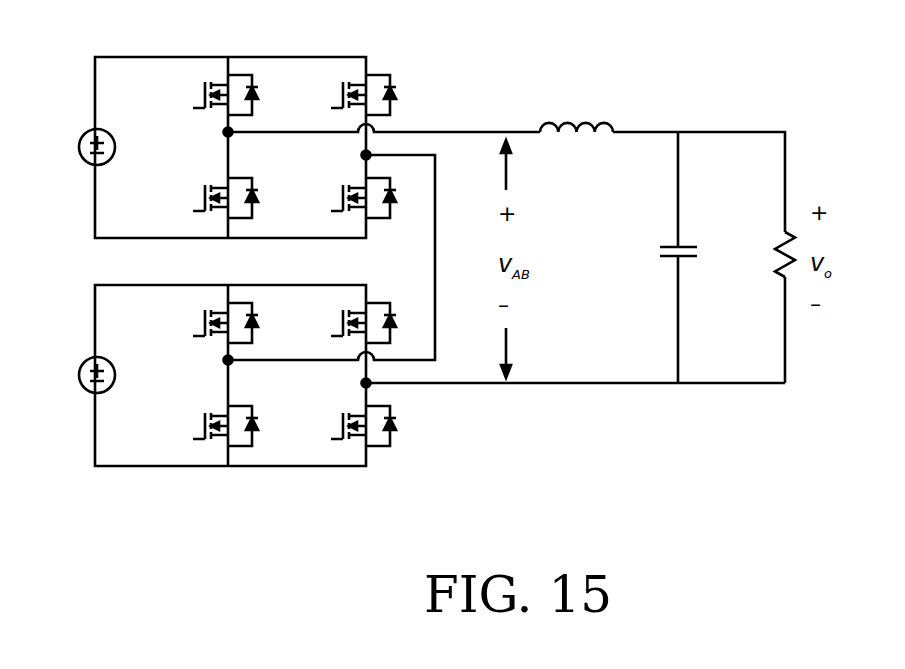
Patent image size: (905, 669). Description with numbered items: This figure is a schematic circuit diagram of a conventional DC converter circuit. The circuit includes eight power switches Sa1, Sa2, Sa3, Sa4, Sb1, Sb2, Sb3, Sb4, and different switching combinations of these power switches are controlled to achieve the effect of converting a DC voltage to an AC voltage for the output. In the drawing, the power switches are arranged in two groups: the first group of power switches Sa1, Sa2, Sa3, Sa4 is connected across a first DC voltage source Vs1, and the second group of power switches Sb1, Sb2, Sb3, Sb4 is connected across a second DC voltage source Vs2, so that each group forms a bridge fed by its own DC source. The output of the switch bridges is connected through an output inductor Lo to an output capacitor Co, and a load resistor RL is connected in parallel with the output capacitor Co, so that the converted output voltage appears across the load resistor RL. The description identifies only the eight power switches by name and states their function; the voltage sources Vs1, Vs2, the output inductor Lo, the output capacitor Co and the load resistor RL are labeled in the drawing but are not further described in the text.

The first DC voltage source Vs1 is at (77, 152).
The second DC voltage source Vs2 is at (77, 380).
The power switch Sa1 is at (207, 95).
The power switch Sa2 is at (207, 198).
The power switch Sa3 is at (346, 95).
The power switch Sa4 is at (346, 198).
The power switch Sb1 is at (210, 323).
The power switch Sb2 is at (210, 426).
The power switch Sb3 is at (346, 323).
The power switch Sb4 is at (346, 426).
The output inductor Lo is at (576, 109).
The output capacitor Co is at (662, 257).
The load resistor RL is at (768, 254).